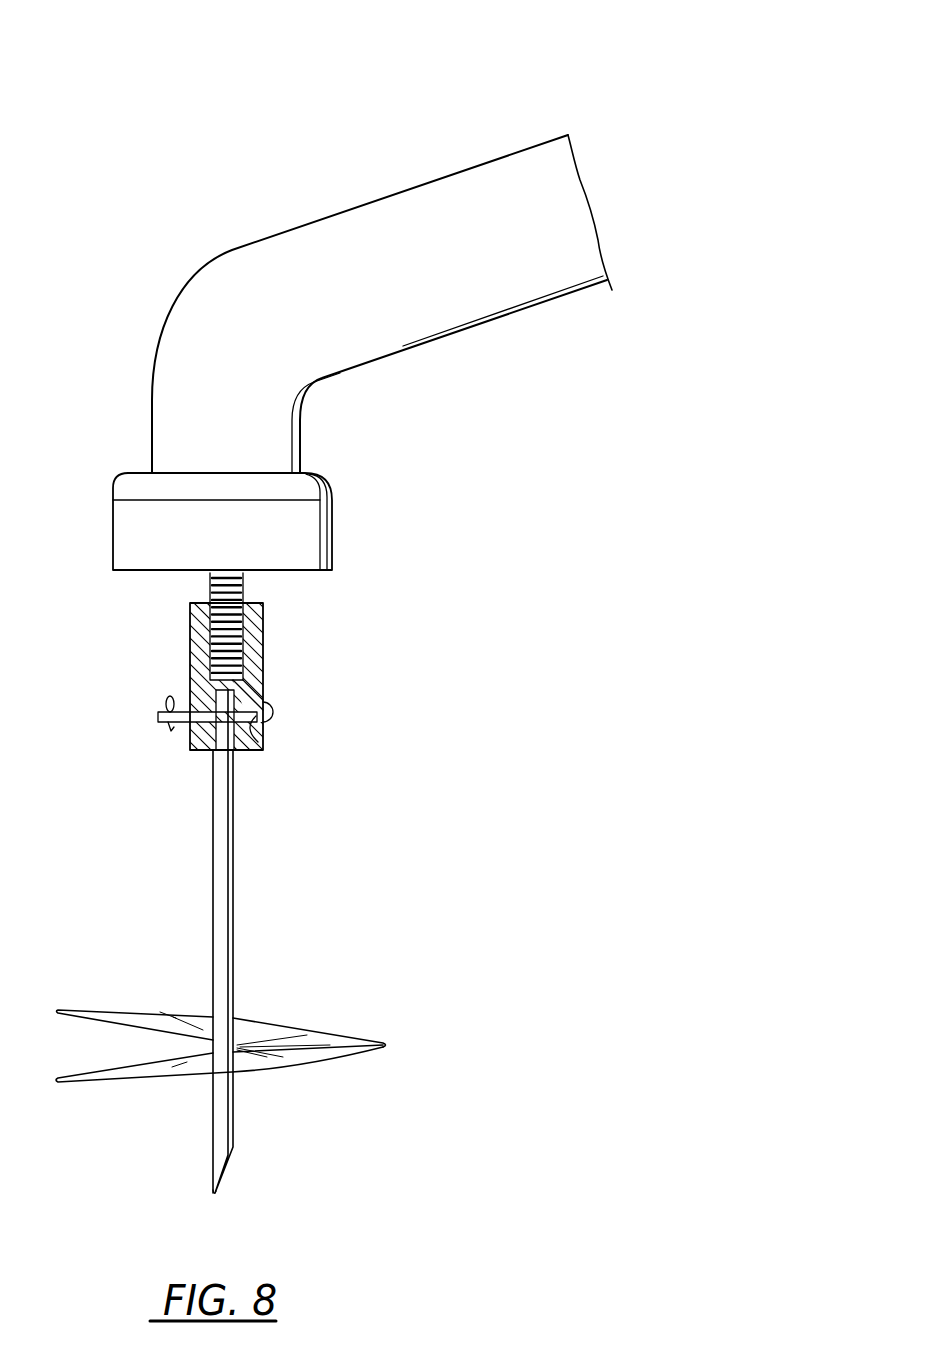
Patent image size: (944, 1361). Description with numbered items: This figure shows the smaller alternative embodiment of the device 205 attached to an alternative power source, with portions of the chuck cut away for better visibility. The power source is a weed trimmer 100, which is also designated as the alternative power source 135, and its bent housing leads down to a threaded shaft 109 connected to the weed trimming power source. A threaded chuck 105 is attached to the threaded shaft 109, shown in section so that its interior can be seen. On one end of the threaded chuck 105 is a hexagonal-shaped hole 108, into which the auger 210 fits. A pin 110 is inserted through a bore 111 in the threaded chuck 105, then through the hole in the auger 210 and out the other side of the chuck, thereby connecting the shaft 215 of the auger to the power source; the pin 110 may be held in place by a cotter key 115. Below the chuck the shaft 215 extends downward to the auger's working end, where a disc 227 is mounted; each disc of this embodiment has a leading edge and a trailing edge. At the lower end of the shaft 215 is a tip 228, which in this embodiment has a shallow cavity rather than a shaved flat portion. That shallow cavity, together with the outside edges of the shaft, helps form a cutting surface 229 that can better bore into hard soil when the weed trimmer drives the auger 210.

The device 205 is at (372, 292).
The alternative power source 135 is at (374, 191).
The weed trimmer 100 is at (513, 308).
The threaded shaft 109 is at (243, 593).
The threaded chuck 105 is at (190, 640).
The hexagonal-shaped hole 108 is at (220, 752).
The cotter key 115 is at (166, 697).
The pin 110 is at (273, 713).
The bore 111 is at (258, 742).
The auger 210 is at (258, 941).
The shaft 215 is at (247, 885).
The disc 227 is at (347, 1037).
The tip 228 is at (213, 1163).
The cutting surface 229 is at (227, 1168).